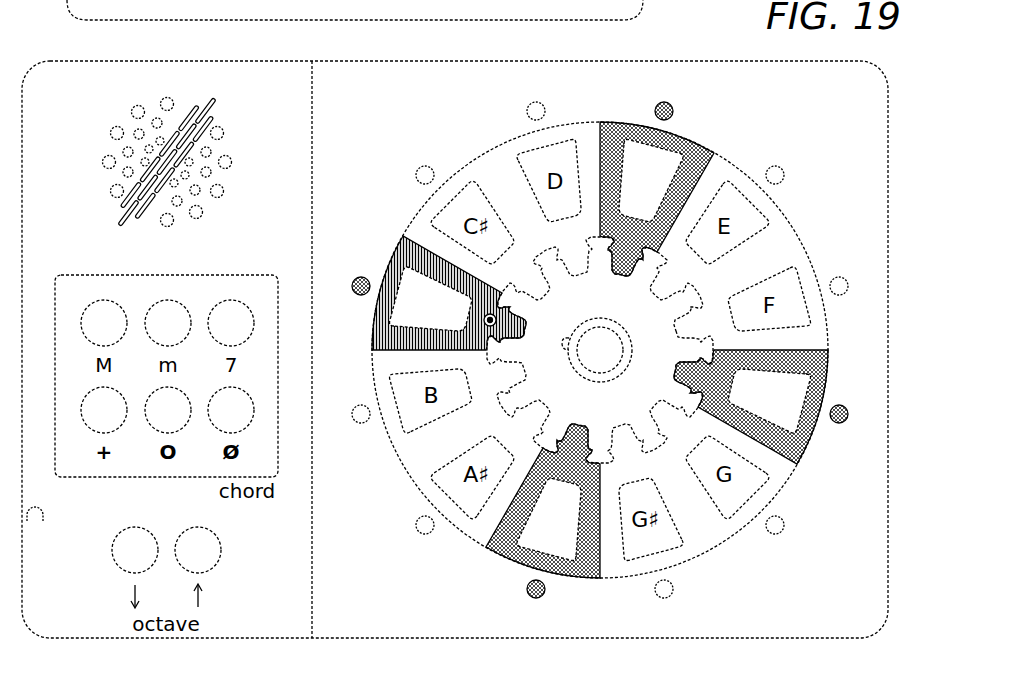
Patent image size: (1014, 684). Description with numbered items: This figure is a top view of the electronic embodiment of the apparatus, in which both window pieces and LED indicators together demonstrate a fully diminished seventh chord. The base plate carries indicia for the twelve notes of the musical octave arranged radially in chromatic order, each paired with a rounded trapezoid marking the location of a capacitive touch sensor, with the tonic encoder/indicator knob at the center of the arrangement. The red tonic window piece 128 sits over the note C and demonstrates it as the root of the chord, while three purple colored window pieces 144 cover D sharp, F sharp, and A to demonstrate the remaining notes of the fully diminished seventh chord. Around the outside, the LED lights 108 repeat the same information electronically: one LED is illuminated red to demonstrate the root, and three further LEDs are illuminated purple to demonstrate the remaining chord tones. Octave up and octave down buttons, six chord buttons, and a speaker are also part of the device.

The LED lights 108 is at (357, 297).
The red tonic window piece 128 is at (403, 236).
The purple colored window pieces 144 is at (700, 130).